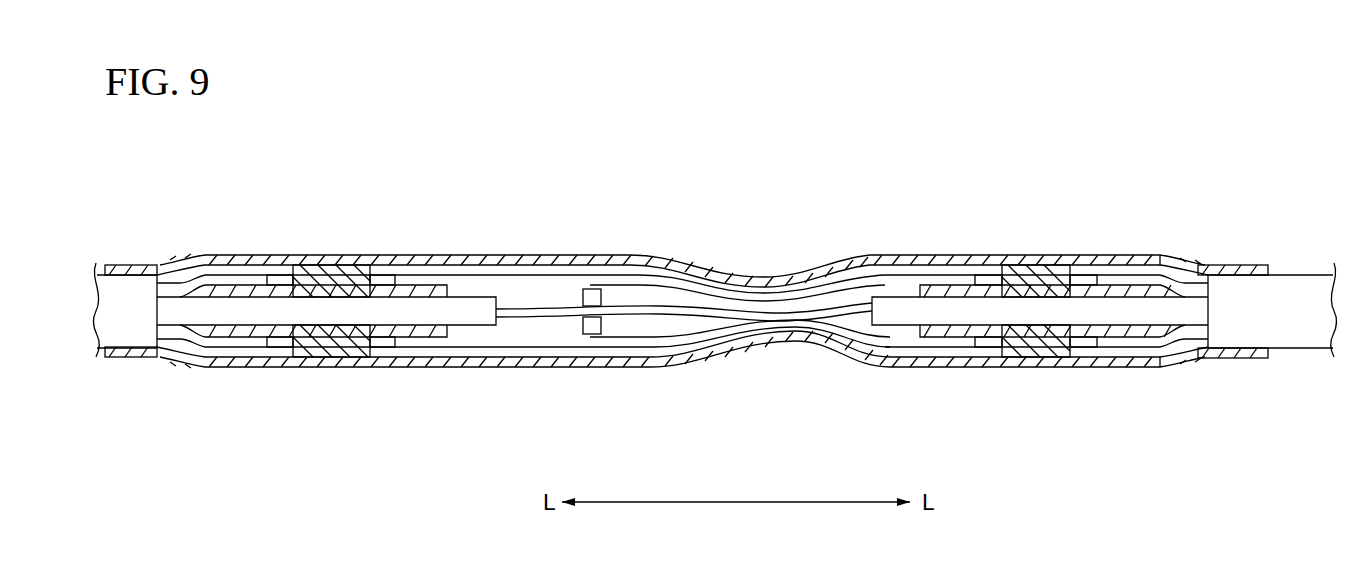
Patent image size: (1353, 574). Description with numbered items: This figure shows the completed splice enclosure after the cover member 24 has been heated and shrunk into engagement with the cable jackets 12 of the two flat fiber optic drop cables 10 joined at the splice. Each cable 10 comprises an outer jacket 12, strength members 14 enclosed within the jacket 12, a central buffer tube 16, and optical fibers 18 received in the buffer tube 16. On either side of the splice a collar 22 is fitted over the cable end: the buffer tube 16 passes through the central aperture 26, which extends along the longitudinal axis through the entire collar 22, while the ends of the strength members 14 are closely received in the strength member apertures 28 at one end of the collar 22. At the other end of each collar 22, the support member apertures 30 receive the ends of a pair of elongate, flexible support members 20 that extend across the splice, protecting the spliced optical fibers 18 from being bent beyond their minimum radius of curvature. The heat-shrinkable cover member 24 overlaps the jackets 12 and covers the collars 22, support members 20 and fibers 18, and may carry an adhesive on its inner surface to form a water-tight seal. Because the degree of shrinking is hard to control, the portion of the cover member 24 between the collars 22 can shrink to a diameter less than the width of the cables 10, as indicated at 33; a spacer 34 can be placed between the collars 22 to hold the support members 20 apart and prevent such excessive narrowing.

The fiber optic drop cable 10 is at (96, 263).
The outer jacket 12 is at (88, 352).
The strength member 14 is at (203, 277).
The central buffer tube 16 is at (314, 327).
The optical fiber 18 is at (675, 305).
The support member 20 is at (890, 258).
The collar 22 is at (323, 259).
The cover member 24 is at (1177, 262).
The central aperture 26 is at (346, 266).
The strength member aperture 28 is at (283, 270).
The support member aperture 30 is at (389, 268).
The narrowed region 33 is at (758, 275).
The spacer 34 is at (590, 265).